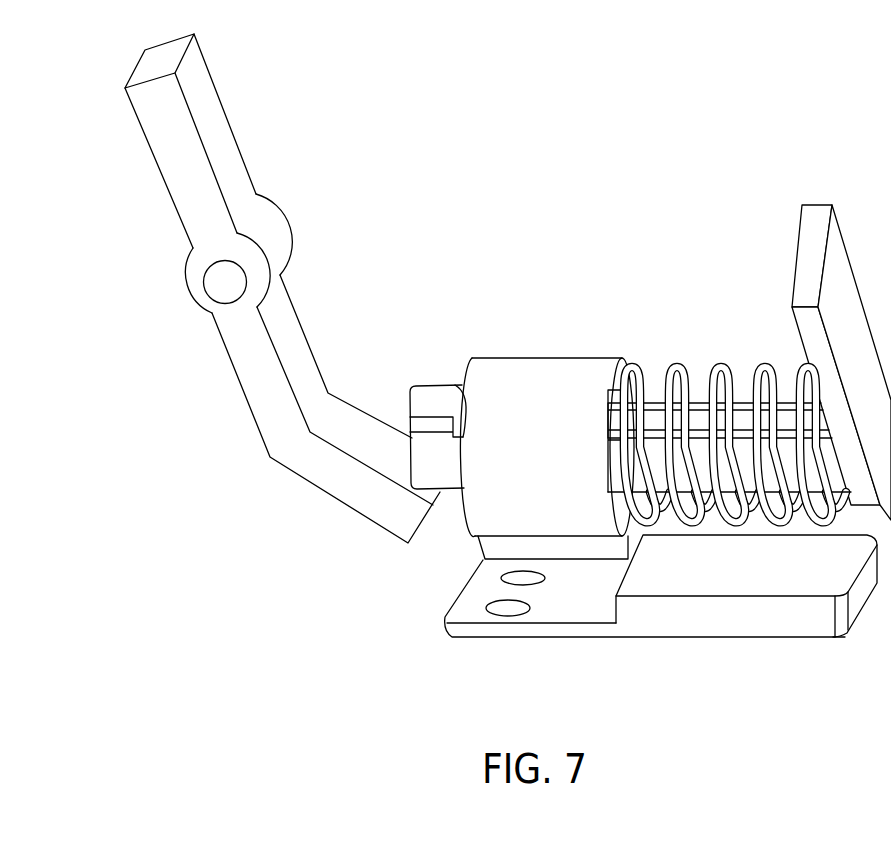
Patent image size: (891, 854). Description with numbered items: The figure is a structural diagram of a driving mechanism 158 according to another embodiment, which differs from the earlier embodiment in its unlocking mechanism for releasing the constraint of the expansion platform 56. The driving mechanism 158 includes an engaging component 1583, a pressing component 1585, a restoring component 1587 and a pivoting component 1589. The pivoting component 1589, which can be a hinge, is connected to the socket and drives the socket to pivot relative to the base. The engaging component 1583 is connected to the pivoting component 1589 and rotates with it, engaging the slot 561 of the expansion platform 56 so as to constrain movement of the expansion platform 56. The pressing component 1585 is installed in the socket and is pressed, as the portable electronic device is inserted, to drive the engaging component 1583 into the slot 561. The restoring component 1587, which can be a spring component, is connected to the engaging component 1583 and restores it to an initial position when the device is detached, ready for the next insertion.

The driving mechanism 158 is at (702, 188).
The pressing component 1585 is at (341, 485).
The restoring component 1587 is at (679, 373).
The pivoting component 1589 is at (742, 415).
The engaging component 1583 is at (582, 548).
The slot 561 is at (537, 616).
The expansion platform 56 is at (735, 622).